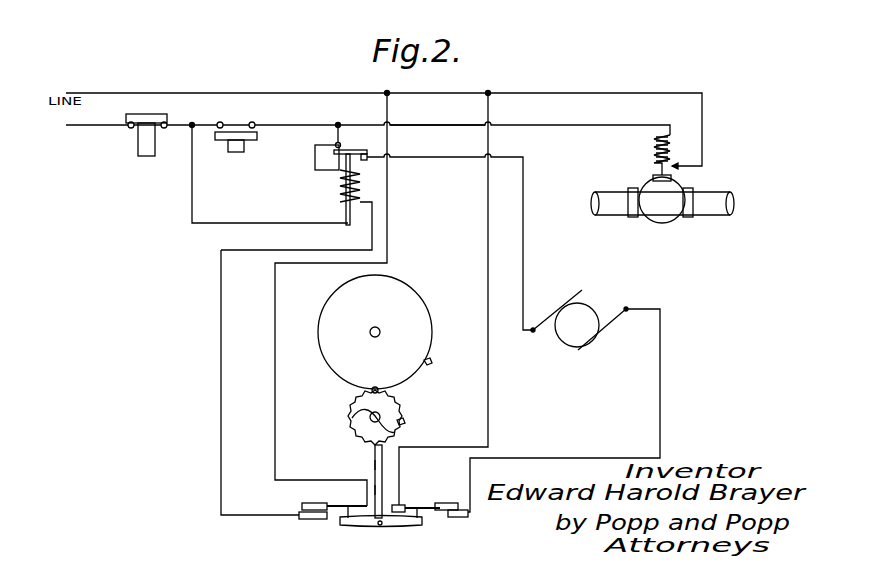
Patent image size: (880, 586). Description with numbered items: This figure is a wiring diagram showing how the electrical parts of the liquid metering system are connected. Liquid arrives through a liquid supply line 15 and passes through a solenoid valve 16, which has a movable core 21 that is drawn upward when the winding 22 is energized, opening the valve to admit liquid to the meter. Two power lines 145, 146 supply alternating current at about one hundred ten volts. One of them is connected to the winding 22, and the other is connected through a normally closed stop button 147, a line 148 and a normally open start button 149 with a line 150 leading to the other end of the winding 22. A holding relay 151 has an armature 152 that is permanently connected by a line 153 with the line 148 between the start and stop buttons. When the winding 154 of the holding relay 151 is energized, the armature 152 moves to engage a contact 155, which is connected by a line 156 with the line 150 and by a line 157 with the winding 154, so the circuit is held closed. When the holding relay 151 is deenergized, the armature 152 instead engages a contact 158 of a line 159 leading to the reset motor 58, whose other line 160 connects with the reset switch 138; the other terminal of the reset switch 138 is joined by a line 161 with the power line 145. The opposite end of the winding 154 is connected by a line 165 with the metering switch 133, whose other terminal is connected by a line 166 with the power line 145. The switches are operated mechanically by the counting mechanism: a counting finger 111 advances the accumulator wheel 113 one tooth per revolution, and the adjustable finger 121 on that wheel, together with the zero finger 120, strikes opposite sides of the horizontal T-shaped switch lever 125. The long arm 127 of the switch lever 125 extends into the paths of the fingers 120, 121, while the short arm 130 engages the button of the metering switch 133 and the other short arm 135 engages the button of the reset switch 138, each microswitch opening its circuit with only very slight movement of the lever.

The power line 145 is at (100, 93).
The power line 146 is at (107, 125).
The stop button 147 is at (138, 150).
The line 148 is at (205, 116).
The start button 149 is at (237, 123).
The line 150 is at (424, 125).
The holding relay 151 is at (344, 205).
The armature 152 is at (350, 217).
The line 153 is at (192, 211).
The winding 154 is at (362, 186).
The contact 155 is at (341, 144).
The line 156 is at (336, 132).
The line 157 is at (315, 158).
The contact 158 is at (365, 161).
The line 159 is at (523, 218).
The line 160 is at (660, 409).
The line 161 is at (488, 409).
The line 165 is at (221, 447).
The line 166 is at (275, 420).
The counting finger 111 is at (376, 387).
The accumulator wheel 113 is at (396, 400).
The adjustable finger 121 is at (405, 425).
The zero finger 120 is at (373, 450).
The long arm 127 is at (382, 463).
The switch lever 125 is at (384, 491).
The short arm 130 is at (365, 527).
The short arm 135 is at (418, 527).
The metering switch 133 is at (300, 508).
The reset switch 138 is at (468, 513).
The movable core 21 is at (660, 134).
The winding 22 is at (652, 148).
The solenoid valve 16 is at (683, 188).
The liquid supply line 15 is at (716, 198).
The reset motor 58 is at (585, 310).